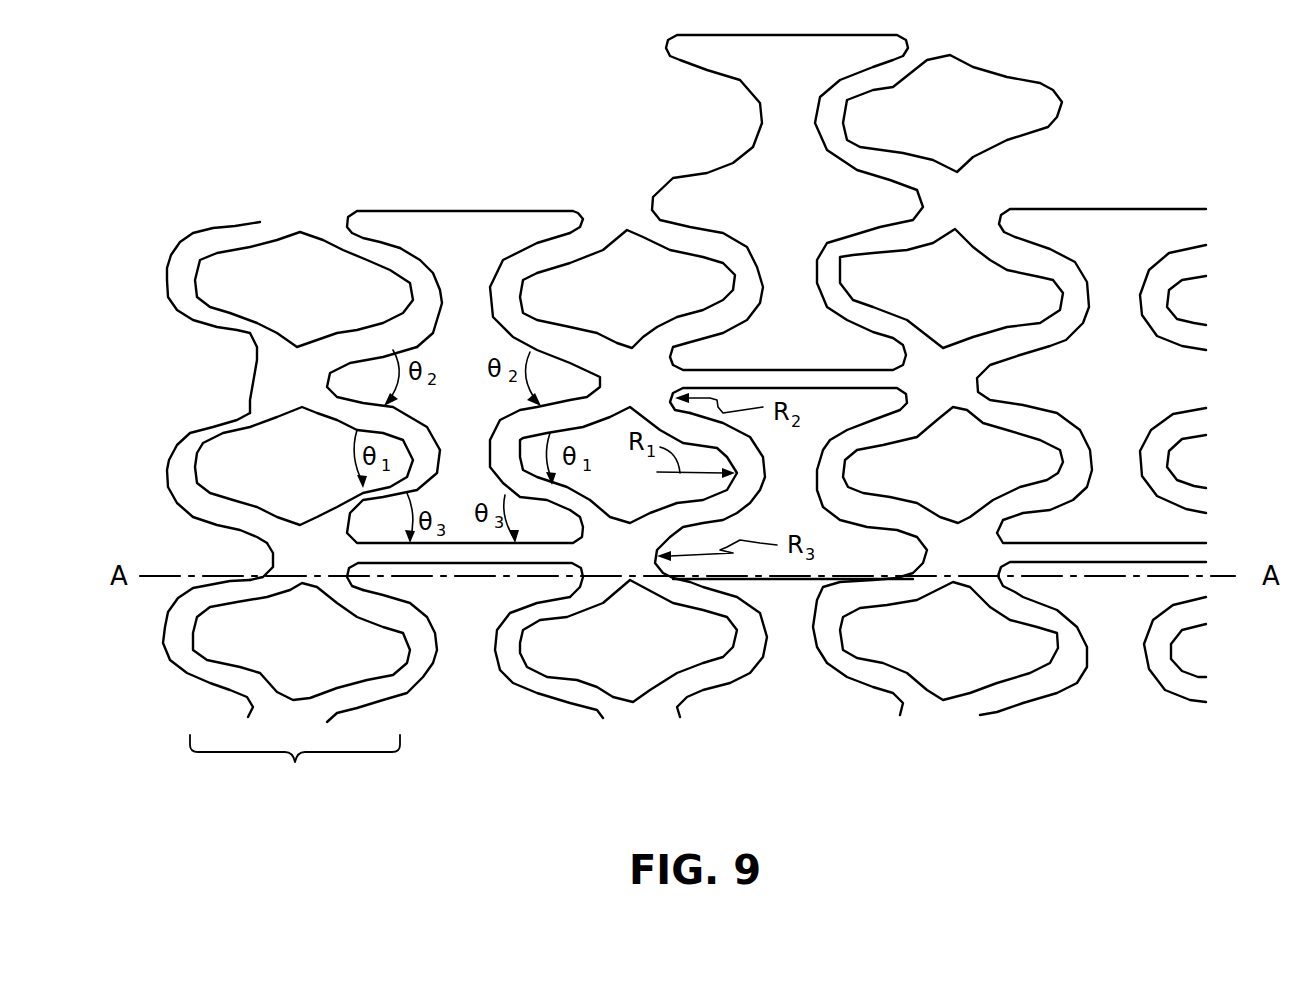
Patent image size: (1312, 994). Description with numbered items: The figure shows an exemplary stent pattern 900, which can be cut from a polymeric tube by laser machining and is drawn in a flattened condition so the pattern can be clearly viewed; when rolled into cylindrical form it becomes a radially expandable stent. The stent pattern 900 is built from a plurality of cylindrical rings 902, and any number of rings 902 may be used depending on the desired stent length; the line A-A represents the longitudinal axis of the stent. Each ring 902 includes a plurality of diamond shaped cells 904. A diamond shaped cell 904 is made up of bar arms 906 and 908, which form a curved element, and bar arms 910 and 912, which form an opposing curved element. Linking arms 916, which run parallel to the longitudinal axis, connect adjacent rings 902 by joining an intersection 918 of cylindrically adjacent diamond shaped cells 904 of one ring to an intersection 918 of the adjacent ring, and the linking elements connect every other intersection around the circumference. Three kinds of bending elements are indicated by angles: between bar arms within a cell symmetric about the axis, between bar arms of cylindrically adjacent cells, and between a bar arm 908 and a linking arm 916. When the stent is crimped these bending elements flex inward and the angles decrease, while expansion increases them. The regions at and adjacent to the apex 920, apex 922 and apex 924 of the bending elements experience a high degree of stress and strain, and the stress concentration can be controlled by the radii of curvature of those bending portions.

The stent pattern 900 is at (1147, 752).
The cylindrical ring 902 is at (295, 770).
The diamond shaped cell 904 is at (620, 657).
The bar arm 906 is at (380, 255).
The bar arm 908 is at (360, 343).
The bar arm 910 is at (213, 240).
The bar arm 912 is at (205, 320).
The linking arm 916 is at (478, 552).
The intersection 918 is at (290, 548).
The apex 920 is at (430, 302).
The apex 922 is at (327, 377).
The apex 924 is at (357, 525).